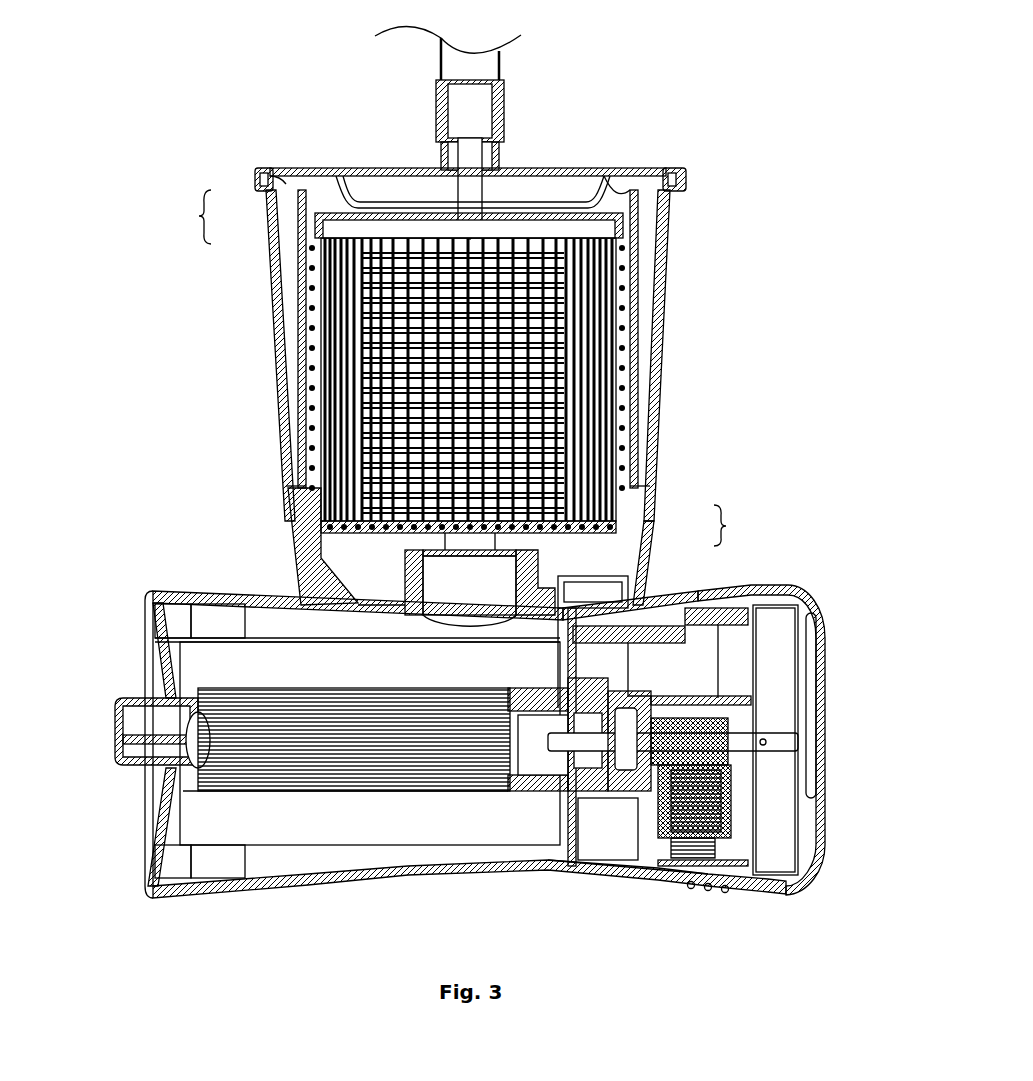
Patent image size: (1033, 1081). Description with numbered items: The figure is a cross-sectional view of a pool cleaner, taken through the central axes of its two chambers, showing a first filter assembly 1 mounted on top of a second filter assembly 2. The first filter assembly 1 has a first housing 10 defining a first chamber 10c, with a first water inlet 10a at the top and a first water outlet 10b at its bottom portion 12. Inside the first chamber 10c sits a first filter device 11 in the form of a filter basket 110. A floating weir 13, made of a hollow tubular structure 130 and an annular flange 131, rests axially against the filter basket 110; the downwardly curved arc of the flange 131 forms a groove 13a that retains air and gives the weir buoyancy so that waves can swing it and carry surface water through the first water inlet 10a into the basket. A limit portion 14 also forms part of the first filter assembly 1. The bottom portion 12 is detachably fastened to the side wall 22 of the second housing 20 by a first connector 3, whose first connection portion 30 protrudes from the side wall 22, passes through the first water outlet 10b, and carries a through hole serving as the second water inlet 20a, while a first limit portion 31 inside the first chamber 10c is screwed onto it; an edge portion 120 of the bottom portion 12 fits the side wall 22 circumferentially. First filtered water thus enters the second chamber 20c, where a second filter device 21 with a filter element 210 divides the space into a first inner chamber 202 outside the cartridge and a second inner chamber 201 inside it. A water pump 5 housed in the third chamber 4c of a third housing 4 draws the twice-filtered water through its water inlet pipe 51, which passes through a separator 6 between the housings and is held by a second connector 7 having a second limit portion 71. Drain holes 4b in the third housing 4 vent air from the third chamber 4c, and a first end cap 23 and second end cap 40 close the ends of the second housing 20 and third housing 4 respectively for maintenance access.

The first filter assembly 1 is at (266, 268).
The second filter assembly 2 is at (176, 577).
The first connector 3 is at (723, 525).
The third housing 4 is at (637, 868).
The drain hole 4b is at (714, 884).
The third chamber 4c is at (598, 833).
The water pump 5 is at (687, 800).
The separator 6 is at (567, 815).
The second connector 7 is at (530, 768).
The first housing 10 is at (650, 297).
The first water inlet 10a is at (362, 165).
The first water outlet 10b is at (393, 597).
The first chamber 10c is at (637, 238).
The first filter device 11 is at (603, 356).
The bottom portion 12 is at (313, 587).
The floating weir 13 is at (190, 217).
The groove 13a is at (612, 178).
The limit portion 14 is at (668, 162).
The second housing 20 is at (197, 882).
The second water inlet 20a is at (463, 562).
The second chamber 20c is at (310, 847).
The second filter device 21 is at (348, 802).
The side wall 22 is at (252, 588).
The first end cap 23 is at (143, 613).
The first connection portion 30 is at (517, 600).
The first limit portion 31 is at (527, 578).
The second end cap 40 is at (813, 677).
The water inlet pipe 51 is at (548, 772).
The second limit portion 71 is at (540, 772).
The filter basket 110 is at (407, 383).
The edge portion 120 is at (625, 597).
The hollow tubular structure 130 is at (296, 226).
The flange 131 is at (318, 172).
The second inner chamber 201 is at (186, 722).
The first inner chamber 202 is at (260, 613).
The filter element 210 is at (272, 803).